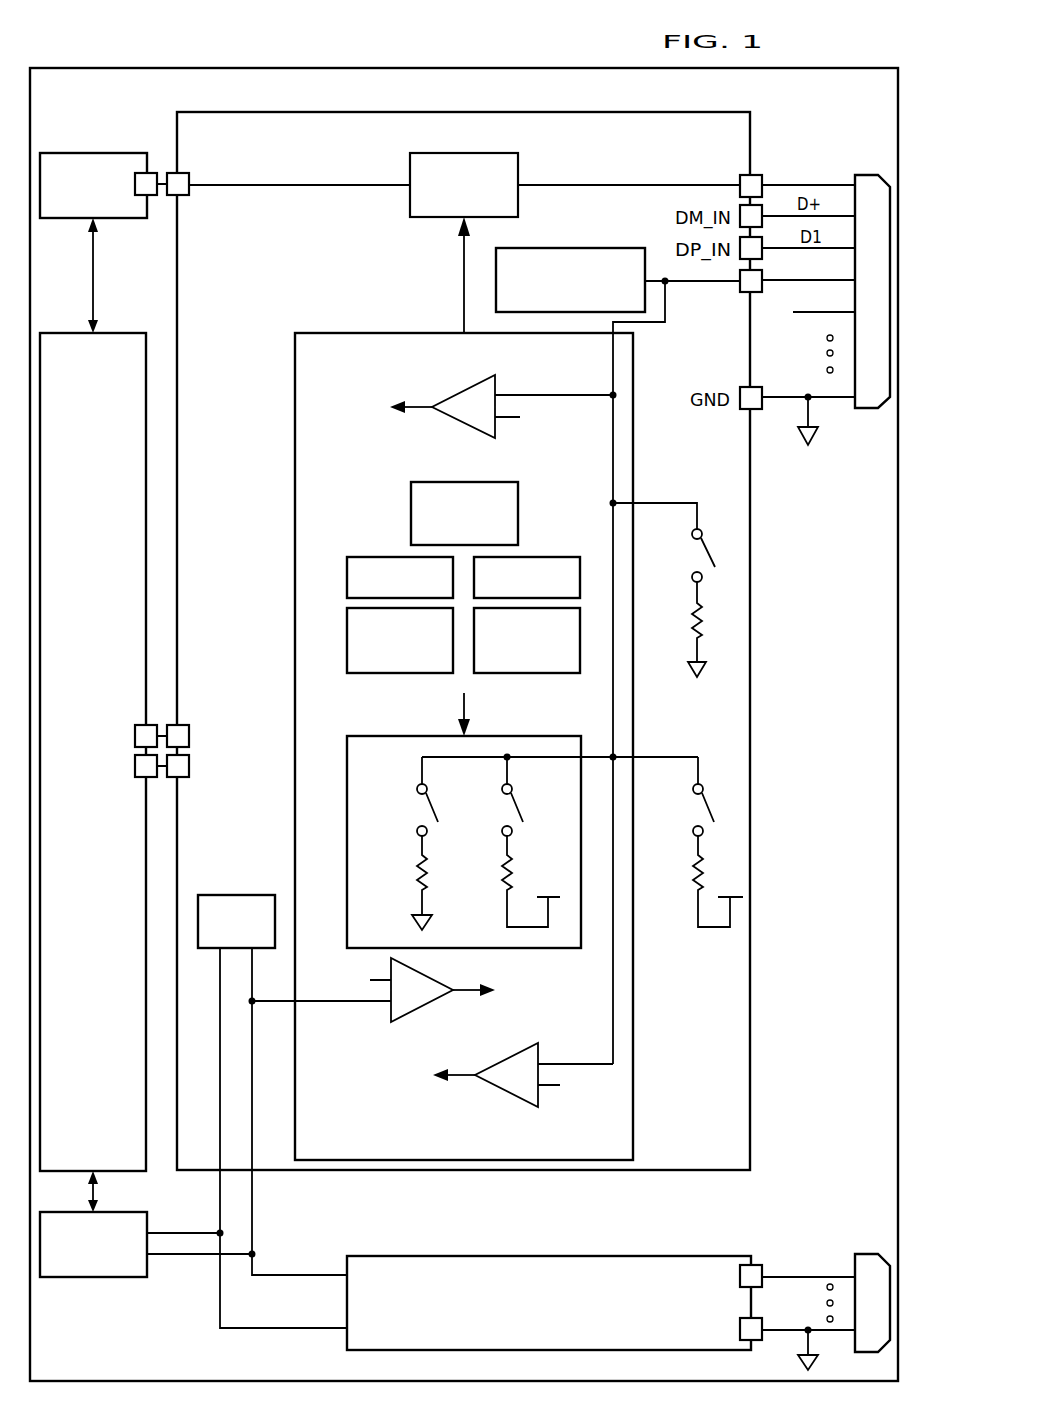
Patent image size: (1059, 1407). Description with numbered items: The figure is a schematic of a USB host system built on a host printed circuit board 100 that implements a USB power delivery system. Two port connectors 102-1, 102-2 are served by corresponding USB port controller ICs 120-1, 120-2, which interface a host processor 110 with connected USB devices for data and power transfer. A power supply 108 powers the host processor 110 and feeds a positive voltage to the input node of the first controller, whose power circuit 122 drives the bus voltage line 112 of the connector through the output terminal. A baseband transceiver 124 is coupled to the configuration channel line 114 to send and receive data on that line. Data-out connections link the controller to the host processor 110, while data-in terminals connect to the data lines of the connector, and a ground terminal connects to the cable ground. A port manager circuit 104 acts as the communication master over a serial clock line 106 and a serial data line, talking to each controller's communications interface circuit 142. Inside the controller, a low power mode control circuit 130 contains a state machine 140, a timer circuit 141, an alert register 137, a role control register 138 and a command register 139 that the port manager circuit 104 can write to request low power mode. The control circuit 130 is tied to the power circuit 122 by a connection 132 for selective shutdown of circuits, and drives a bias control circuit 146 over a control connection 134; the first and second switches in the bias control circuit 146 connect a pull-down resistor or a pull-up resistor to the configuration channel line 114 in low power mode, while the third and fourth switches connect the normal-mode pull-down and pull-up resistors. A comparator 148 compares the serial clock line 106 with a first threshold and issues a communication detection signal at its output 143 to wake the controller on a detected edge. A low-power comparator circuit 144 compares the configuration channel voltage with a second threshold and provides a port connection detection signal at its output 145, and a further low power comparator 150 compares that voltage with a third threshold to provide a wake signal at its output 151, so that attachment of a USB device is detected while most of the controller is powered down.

The host printed circuit board 100 is at (196, 66).
The port connector 102-1 is at (868, 175).
The port connector 102-2 is at (868, 1254).
The port manager circuit 104 is at (82, 1277).
The serial clock line 106 is at (218, 1292).
The power supply 108 is at (82, 153).
The host processor 110 is at (112, 783).
The bus voltage line 112 is at (768, 173).
The configuration channel line 114 is at (770, 284).
The USB port controller IC 120-1 is at (313, 148).
The USB port controller IC 120-2 is at (578, 1334).
The power circuit 122 is at (410, 175).
The baseband transceiver 124 is at (572, 248).
The low power mode control circuit 130 is at (373, 328).
The connection 132 is at (462, 282).
The control connection 134 is at (468, 710).
The alert register 137 is at (390, 557).
The role control register 138 is at (400, 673).
The command register 139 is at (550, 673).
The state machine 140 is at (520, 493).
The timer circuit 141 is at (538, 557).
The communications interface circuit 142 is at (236, 895).
The comparator output 143 is at (468, 993).
The low-power comparator circuit 144 is at (462, 428).
The comparator output 145 is at (414, 410).
The bias control circuit 146 is at (402, 774).
The comparator 148 is at (422, 1010).
The low power comparator 150 is at (508, 1095).
The comparator output 151 is at (460, 1078).